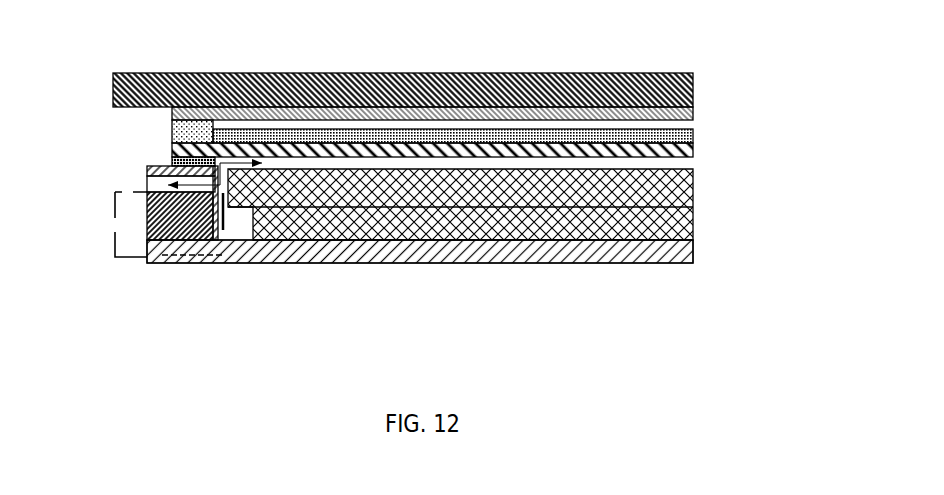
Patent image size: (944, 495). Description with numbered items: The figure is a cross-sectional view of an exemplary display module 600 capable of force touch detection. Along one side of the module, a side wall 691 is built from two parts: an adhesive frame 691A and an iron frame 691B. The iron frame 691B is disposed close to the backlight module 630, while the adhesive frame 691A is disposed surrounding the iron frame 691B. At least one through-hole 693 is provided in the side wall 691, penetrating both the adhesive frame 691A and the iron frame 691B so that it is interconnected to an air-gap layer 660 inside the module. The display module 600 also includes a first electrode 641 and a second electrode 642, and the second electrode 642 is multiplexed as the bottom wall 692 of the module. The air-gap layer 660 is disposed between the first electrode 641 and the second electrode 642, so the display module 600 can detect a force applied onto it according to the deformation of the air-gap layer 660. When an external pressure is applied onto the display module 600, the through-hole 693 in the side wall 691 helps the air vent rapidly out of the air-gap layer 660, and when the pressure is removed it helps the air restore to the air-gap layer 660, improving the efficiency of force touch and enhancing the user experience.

The display module 600 is at (704, 63).
The first electrode 641 is at (693, 131).
The air-gap layer 660 is at (680, 168).
The backlight module 630 is at (693, 216).
The bottom wall 692 is at (430, 264).
The second electrode 642 is at (420, 269).
The through-hole 693 is at (147, 187).
The side wall 691 is at (113, 198).
The adhesive frame 691A is at (147, 237).
The iron frame 691B is at (205, 257).